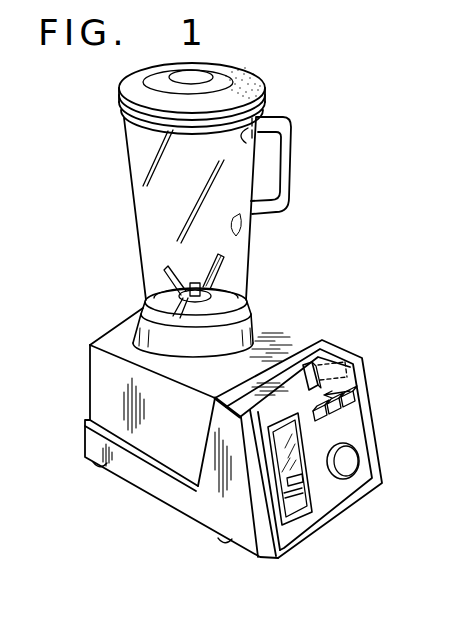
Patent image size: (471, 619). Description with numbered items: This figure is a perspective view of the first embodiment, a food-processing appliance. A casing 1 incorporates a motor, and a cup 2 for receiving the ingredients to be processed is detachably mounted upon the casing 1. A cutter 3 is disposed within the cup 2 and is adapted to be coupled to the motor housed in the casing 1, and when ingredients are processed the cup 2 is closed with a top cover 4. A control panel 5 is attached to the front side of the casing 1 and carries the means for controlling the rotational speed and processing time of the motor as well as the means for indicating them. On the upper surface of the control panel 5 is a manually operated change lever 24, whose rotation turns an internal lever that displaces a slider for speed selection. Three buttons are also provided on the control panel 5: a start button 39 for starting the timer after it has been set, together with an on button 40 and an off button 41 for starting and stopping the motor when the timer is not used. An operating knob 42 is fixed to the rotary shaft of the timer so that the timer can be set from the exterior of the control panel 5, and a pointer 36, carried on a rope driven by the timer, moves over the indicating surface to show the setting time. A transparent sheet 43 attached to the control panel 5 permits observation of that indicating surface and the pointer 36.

The casing 1 is at (131, 471).
The cup 2 is at (140, 194).
The cutter 3 is at (218, 280).
The top cover 4 is at (248, 86).
The control panel 5 is at (337, 492).
The change lever 24 is at (308, 364).
The pointer 36 is at (296, 506).
The start button 39 is at (354, 404).
The on button 40 is at (341, 410).
The off button 41 is at (328, 418).
The operating knob 42 is at (350, 468).
The transparent sheet 43 is at (283, 460).